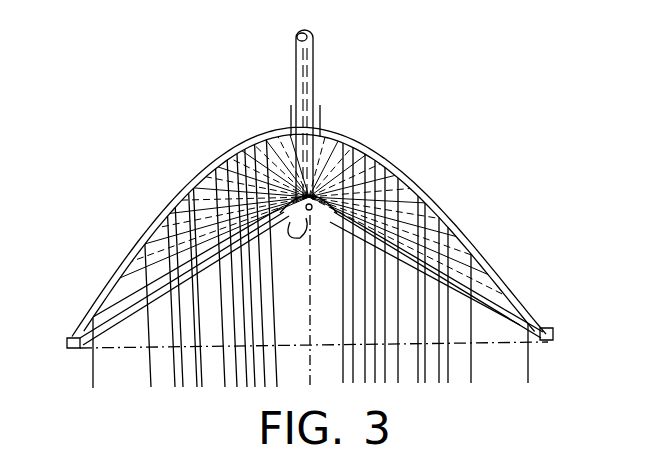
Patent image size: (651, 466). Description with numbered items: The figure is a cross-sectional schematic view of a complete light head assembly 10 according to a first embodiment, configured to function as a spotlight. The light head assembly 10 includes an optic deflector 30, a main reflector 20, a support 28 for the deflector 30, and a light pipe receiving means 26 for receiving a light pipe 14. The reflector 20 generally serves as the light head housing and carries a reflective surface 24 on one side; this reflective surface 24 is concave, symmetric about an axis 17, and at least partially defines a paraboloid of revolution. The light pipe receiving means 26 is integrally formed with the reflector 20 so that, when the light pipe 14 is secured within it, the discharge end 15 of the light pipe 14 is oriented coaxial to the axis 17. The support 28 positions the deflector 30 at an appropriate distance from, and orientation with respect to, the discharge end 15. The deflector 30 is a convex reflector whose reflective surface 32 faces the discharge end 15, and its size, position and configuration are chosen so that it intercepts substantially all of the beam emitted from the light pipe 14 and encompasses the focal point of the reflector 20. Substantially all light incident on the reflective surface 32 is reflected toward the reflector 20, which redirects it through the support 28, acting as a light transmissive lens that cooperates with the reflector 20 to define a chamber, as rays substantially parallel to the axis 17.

The light head assembly 10 is at (108, 276).
The light pipe 14 is at (320, 40).
The discharge end 15 is at (360, 148).
The axis 17 is at (318, 73).
The main reflector 20 is at (425, 168).
The reflective surface 24 is at (492, 268).
The light pipe receiving means 26 is at (322, 130).
The support 28 is at (497, 303).
The optic deflector 30 is at (208, 173).
The reflective surface 32 is at (270, 205).